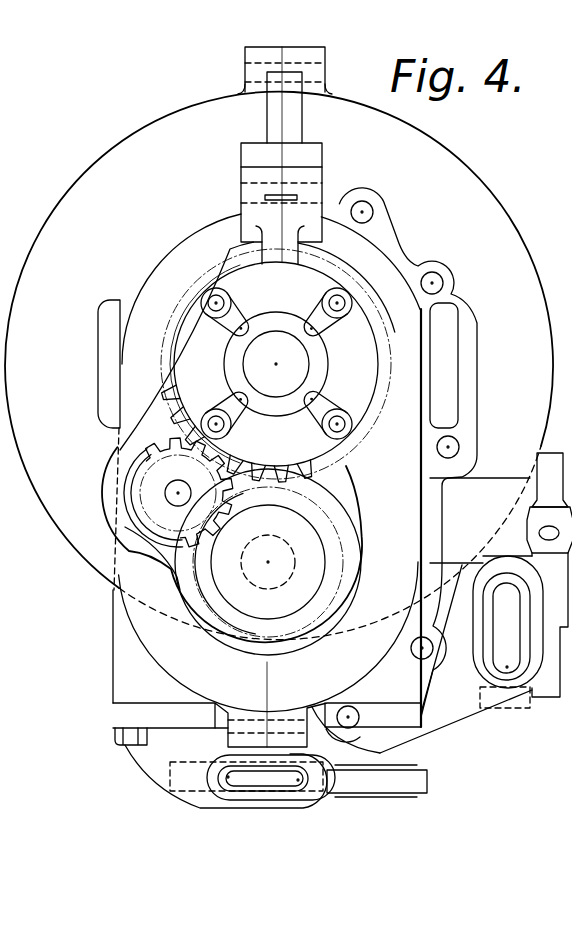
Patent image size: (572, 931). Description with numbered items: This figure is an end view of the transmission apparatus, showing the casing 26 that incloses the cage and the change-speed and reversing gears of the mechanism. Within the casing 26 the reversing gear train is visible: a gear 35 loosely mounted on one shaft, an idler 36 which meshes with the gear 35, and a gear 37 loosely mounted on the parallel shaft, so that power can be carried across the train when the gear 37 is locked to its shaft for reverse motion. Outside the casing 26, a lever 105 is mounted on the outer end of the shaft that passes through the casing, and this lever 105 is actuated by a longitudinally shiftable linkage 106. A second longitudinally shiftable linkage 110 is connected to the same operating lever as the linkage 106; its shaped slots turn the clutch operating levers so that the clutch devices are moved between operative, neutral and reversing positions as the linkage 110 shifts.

The casing 26 is at (279, 366).
The gear 37 is at (170, 406).
The idler 36 is at (225, 452).
The gear 35 is at (239, 498).
The lever 105 is at (554, 665).
The linkage 106 is at (507, 669).
The linkage 110 is at (291, 781).